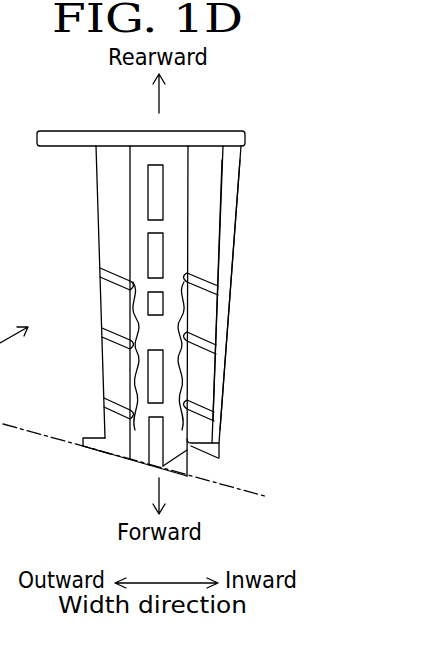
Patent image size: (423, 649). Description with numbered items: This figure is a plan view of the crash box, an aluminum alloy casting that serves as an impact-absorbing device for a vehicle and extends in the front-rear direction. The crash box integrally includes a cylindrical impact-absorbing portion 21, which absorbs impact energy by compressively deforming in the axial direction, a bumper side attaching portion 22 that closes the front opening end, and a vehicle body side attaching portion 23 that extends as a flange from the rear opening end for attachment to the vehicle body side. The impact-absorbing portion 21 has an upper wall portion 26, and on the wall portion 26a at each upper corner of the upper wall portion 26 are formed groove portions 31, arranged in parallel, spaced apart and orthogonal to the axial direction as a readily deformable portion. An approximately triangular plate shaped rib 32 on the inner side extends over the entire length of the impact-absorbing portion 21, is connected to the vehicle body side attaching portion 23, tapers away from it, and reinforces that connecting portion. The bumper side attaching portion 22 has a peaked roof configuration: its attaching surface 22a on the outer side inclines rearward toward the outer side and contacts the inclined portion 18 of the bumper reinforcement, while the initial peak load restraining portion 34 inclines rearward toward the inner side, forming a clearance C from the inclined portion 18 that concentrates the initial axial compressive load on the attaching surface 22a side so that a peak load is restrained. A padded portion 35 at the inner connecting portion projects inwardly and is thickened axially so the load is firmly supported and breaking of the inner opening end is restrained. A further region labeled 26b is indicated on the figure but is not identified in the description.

The inclined portion 18 is at (240, 489).
The impact-absorbing portion 21 is at (108, 312).
The bumper side attaching portion 22 is at (83, 440).
The attaching surface 22a is at (97, 457).
The vehicle body side attaching portion 23 is at (58, 141).
The upper wall portion 26 is at (108, 233).
The wall portion 26a is at (108, 372).
The inner side strip 26b is at (220, 228).
The groove portion 31 is at (181, 322).
The rib 32 is at (232, 278).
The initial peak load restraining portion 34 is at (217, 450).
The padded portion 35 is at (226, 428).
The clearance C is at (216, 472).